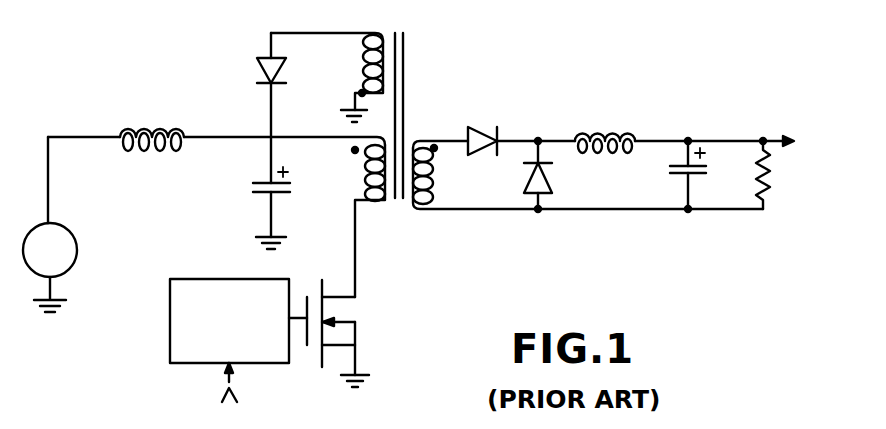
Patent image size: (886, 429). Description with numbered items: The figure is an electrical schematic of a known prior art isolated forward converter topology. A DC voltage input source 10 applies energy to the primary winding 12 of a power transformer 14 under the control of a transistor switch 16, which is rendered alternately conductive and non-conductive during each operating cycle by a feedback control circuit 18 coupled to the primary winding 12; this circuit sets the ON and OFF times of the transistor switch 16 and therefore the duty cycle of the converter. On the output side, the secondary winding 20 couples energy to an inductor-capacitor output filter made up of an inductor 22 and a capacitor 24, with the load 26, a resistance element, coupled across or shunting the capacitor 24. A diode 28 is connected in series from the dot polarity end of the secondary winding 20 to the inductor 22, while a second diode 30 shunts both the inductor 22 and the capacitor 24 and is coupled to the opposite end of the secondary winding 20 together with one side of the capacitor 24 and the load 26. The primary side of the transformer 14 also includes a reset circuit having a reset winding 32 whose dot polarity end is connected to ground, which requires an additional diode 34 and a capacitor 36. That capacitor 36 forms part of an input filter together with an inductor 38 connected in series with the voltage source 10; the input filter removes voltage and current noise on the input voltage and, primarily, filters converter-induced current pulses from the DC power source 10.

The DC voltage input source 10 is at (70, 233).
The primary winding 12 is at (362, 182).
The power transformer 14 is at (411, 105).
The transistor switch 16 is at (358, 315).
The feedback control circuit 18 is at (168, 316).
The secondary winding 20 is at (435, 178).
The inductor 22 is at (605, 130).
The capacitor 24 is at (706, 170).
The load 26 is at (770, 184).
The diode 28 is at (488, 123).
The second diode 30 is at (553, 180).
The reset winding 32 is at (375, 32).
The diode 34 is at (262, 72).
The capacitor 36 is at (250, 190).
The inductor 38 is at (148, 128).